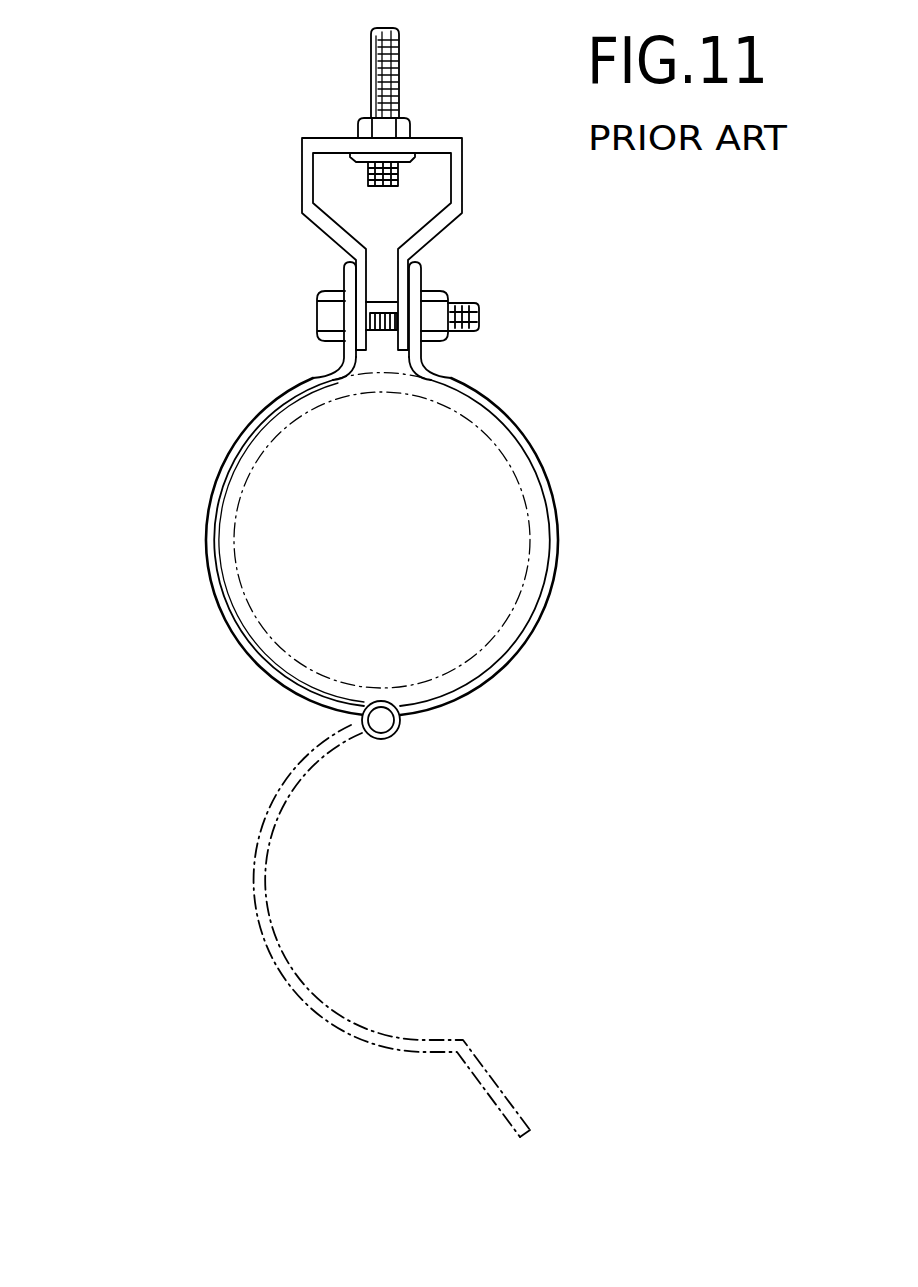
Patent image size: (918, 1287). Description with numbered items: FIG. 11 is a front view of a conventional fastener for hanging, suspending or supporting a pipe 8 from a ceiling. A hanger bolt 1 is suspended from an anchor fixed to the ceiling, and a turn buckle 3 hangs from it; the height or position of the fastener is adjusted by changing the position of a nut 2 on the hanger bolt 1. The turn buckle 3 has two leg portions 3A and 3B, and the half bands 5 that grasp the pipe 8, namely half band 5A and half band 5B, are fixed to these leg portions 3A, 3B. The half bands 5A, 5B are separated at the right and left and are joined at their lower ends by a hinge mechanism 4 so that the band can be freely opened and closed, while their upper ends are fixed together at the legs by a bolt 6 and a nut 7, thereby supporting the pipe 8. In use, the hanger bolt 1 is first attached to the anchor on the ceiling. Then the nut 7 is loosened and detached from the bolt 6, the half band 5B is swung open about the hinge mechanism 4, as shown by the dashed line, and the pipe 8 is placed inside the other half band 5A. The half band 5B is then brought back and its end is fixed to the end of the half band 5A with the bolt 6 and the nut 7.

The hanger bolt 1 is at (398, 72).
The nut 2 is at (368, 130).
The turn buckle 3 is at (393, 232).
The leg portion 3A is at (330, 233).
The leg portion 3B is at (437, 242).
The hinge mechanism 4 is at (388, 727).
The half bands 5 is at (366, 699).
The half band 5A is at (209, 594).
The half band 5B is at (555, 495).
The bolt 6 is at (325, 318).
The nut 7 is at (437, 337).
The pipe 8 is at (518, 612).